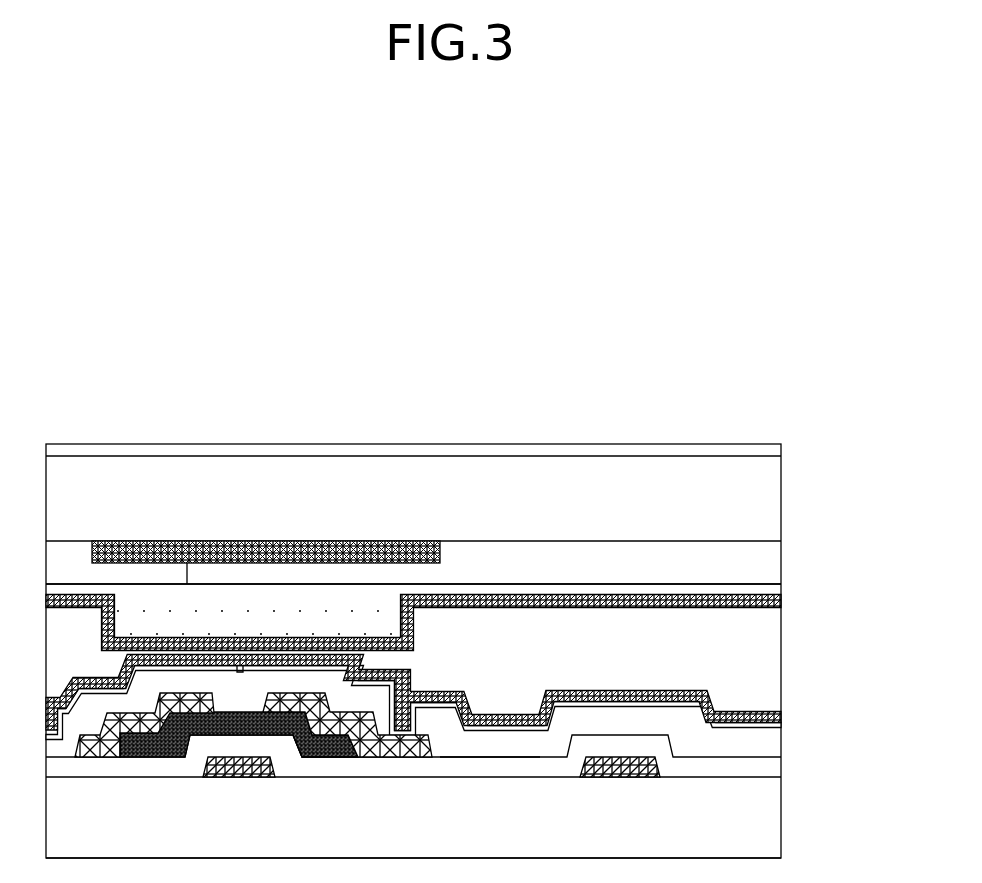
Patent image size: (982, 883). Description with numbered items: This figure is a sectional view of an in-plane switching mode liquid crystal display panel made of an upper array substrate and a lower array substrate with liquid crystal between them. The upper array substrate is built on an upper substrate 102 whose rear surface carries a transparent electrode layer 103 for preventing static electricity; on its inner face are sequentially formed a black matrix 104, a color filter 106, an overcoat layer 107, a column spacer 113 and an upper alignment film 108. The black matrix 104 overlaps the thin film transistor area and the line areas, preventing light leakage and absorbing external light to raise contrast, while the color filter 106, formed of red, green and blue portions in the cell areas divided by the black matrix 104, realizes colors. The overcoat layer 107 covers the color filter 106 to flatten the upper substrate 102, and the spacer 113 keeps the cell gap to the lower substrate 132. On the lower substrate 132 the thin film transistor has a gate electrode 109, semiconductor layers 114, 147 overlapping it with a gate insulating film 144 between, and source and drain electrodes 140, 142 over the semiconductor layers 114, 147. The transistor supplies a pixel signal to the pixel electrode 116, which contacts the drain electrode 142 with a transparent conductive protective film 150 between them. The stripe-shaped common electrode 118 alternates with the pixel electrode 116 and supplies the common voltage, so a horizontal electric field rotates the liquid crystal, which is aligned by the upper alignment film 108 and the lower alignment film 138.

The transparent electrode layer 103 is at (781, 449).
The upper substrate 102 is at (781, 503).
The black matrix 104 is at (233, 541).
The color filter 106 is at (781, 556).
The overcoat layer 107 is at (781, 585).
The upper alignment film 108 is at (784, 607).
The spacer 113 is at (400, 621).
The lower alignment film 138 is at (781, 712).
The pixel electrode 116 is at (781, 722).
The protective film 150 is at (778, 743).
The gate insulating film 144 is at (469, 766).
The lower substrate 132 is at (781, 800).
The gate electrode 109 is at (240, 767).
The common electrode 118 is at (625, 768).
The semiconductor layer 114 is at (170, 742).
The semiconductor layer 147 is at (347, 735).
The source electrode 140 is at (187, 708).
The drain electrode 142 is at (306, 714).